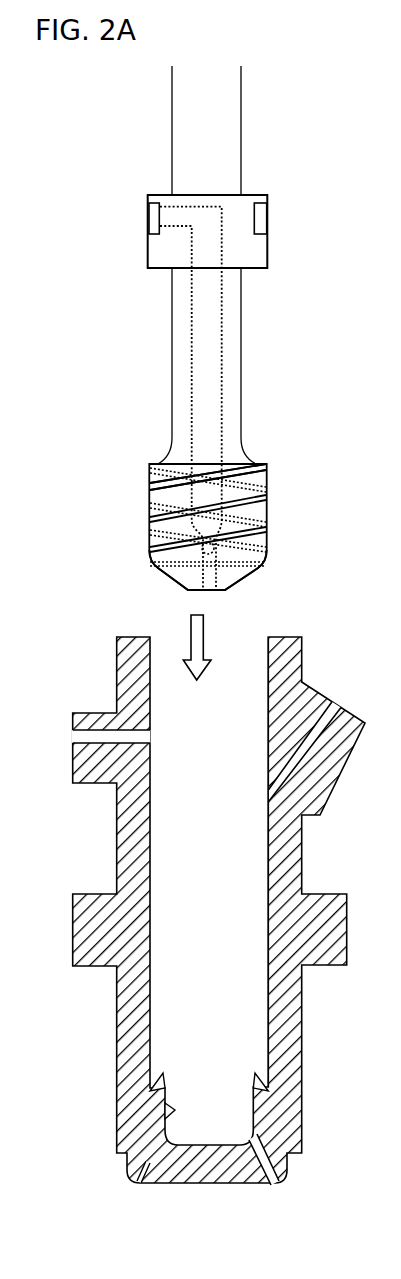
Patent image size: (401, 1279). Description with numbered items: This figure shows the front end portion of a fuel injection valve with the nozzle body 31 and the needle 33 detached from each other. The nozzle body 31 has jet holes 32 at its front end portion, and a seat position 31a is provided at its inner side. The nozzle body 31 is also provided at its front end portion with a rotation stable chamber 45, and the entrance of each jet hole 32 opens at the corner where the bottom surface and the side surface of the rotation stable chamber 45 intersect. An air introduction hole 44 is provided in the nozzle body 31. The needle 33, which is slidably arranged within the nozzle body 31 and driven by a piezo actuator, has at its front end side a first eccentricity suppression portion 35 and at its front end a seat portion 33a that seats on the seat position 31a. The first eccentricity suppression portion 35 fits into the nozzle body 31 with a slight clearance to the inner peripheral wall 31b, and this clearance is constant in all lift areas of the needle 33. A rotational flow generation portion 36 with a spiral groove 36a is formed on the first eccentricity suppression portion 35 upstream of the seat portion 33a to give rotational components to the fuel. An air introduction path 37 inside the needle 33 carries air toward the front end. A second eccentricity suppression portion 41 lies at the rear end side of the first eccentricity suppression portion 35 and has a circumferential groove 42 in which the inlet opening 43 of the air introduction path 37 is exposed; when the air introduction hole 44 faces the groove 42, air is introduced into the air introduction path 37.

The nozzle body 31 is at (302, 1112).
The seat position 31a is at (255, 1080).
The inner peripheral wall 31b is at (260, 1002).
The jet hole 32 is at (140, 1184).
The needle 33 is at (241, 365).
The seat portion 33a is at (160, 568).
The first eccentricity suppression portion 35 is at (268, 464).
The rotational flow generation portion 36 is at (279, 465).
The spiral groove 36a is at (149, 483).
The air introduction path 37 is at (245, 308).
The second eccentricity suppression portion 41 is at (267, 195).
The groove 42 is at (258, 217).
The opening 43 is at (160, 226).
The air introduction hole 44 is at (93, 733).
The rotation stable chamber 45 is at (165, 1112).